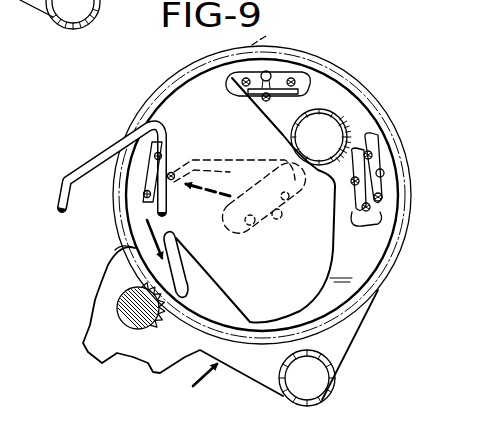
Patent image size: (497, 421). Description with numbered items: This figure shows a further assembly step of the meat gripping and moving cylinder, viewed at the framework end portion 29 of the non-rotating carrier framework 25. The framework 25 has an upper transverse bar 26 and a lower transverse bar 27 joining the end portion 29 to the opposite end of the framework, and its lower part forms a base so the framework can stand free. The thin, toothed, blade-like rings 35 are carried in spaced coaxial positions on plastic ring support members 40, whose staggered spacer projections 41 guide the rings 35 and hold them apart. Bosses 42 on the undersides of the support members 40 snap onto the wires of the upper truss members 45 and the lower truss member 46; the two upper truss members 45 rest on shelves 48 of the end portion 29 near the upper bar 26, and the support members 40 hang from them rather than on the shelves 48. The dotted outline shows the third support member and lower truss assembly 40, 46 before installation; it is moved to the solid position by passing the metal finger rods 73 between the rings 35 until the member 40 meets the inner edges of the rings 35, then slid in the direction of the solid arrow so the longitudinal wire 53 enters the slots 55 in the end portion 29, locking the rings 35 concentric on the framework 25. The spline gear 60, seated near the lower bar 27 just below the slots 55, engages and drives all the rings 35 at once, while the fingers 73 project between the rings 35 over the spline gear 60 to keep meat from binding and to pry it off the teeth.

The carrier framework 25 is at (230, 325).
The upper transverse bar 26 is at (338, 117).
The lower transverse bar 27 is at (328, 393).
The framework end portion 29 is at (360, 267).
The blade-like rings 35 is at (138, 272).
The ring support member 40 is at (306, 76).
The spacer projections 41 is at (290, 62).
The bosses 42 is at (228, 83).
The upper truss member 45 is at (200, 78).
The lower truss member 46 is at (300, 222).
The shelves 48 is at (283, 100).
The longitudinal wire 53 is at (170, 155).
The slots 55 is at (128, 262).
The spline gear 60 is at (128, 305).
The finger rods 73 is at (85, 168).